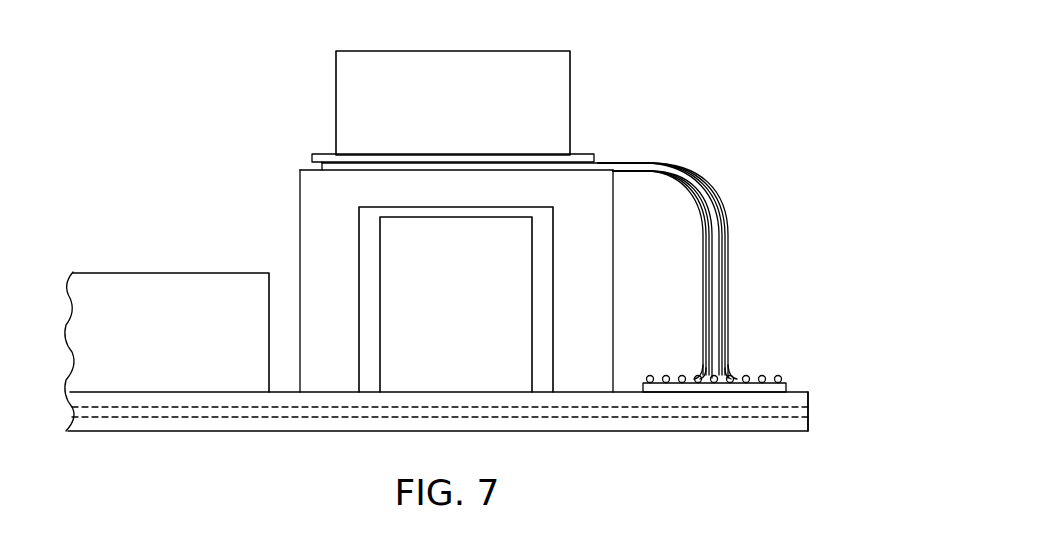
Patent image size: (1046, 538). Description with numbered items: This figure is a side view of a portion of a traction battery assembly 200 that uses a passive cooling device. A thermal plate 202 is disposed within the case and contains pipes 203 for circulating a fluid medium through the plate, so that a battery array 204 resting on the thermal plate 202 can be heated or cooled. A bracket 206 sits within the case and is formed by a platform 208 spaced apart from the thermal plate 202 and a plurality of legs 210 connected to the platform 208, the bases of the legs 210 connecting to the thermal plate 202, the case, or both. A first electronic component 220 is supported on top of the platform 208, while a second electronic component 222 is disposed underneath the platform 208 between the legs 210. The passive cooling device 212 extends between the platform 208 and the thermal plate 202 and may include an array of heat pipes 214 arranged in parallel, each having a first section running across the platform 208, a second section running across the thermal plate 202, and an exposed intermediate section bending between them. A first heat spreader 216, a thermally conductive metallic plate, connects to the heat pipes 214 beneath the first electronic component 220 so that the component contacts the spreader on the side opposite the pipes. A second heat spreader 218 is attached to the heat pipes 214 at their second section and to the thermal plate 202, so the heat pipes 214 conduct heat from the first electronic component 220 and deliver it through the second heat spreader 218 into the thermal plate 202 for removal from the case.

The traction battery assembly 200 is at (678, 57).
The thermal plate 202 is at (173, 432).
The pipes 203 is at (627, 419).
The battery array 204 is at (171, 332).
The bracket 206 is at (307, 190).
The platform 208 is at (592, 186).
The legs 210 is at (308, 233).
The passive cooling device 212 is at (310, 136).
The heat pipes 214 is at (598, 162).
The first heat spreader 216 is at (583, 156).
The second heat spreader 218 is at (787, 390).
The first electronic component 220 is at (453, 103).
The second electronic component 222 is at (456, 299).